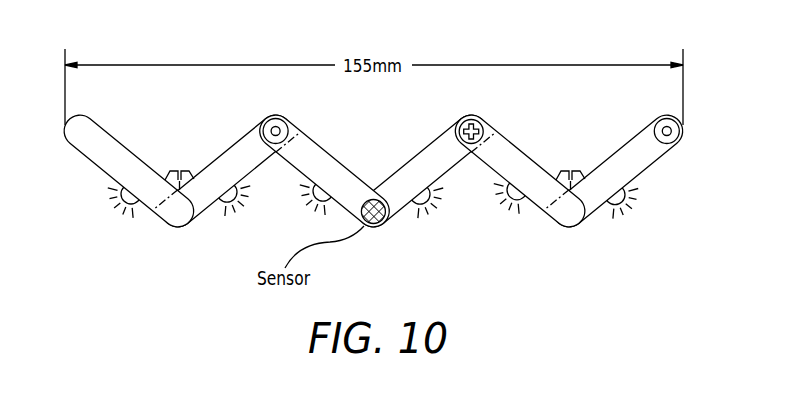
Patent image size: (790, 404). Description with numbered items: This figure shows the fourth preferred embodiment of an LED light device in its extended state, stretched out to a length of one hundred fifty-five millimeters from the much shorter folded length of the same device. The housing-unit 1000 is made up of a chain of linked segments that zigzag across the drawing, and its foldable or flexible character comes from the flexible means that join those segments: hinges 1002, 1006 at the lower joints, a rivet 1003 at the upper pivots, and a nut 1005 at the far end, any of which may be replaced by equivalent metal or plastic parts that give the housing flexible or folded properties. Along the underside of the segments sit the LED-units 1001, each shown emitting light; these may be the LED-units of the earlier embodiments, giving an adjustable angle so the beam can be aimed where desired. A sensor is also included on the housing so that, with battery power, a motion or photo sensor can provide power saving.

The housing-unit 1000 is at (120, 163).
The LED-unit 1001 is at (627, 204).
The hinge 1002 is at (178, 170).
The rivet 1003 is at (289, 124).
The nut 1005 is at (674, 144).
The hinge 1006 is at (572, 171).